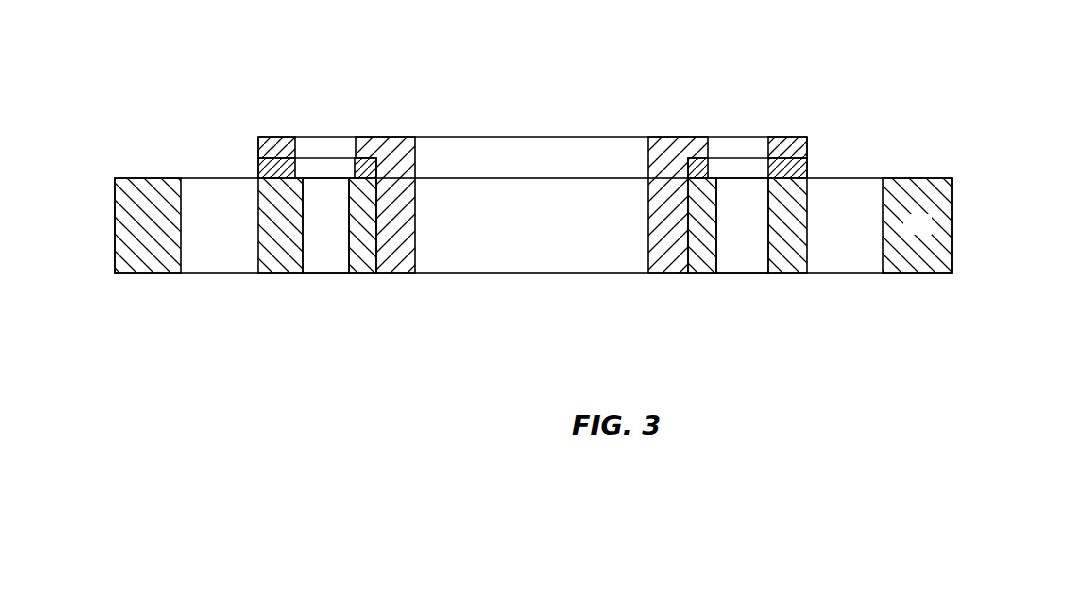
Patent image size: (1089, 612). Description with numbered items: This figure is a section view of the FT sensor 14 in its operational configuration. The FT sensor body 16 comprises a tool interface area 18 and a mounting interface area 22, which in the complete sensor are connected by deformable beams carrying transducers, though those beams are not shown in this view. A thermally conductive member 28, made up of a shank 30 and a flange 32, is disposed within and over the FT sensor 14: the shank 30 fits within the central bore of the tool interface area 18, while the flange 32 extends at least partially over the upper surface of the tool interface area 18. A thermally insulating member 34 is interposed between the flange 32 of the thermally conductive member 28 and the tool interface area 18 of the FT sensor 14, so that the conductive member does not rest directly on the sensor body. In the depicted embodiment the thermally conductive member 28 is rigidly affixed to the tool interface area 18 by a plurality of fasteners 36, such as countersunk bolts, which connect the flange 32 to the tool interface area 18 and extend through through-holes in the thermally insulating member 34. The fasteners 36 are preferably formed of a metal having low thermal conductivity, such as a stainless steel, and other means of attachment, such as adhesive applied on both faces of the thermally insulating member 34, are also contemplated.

The FT sensor 14 is at (589, 189).
The FT sensor body 16 is at (533, 230).
The tool interface area 18 is at (780, 258).
The mounting interface area 22 is at (917, 225).
The thermally conductive member 28 is at (562, 130).
The shank 30 is at (400, 257).
The flange 32 is at (807, 148).
The thermally insulating member 34 is at (807, 171).
The fasteners 36 is at (330, 250).